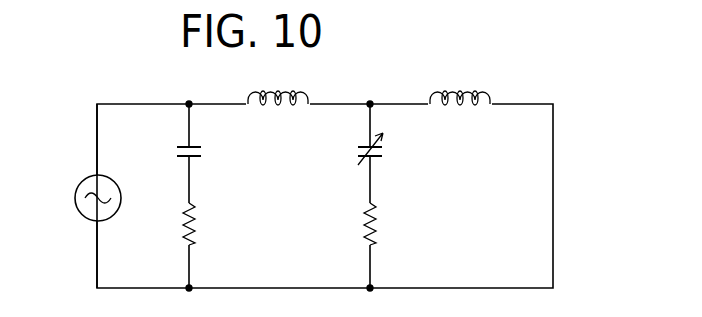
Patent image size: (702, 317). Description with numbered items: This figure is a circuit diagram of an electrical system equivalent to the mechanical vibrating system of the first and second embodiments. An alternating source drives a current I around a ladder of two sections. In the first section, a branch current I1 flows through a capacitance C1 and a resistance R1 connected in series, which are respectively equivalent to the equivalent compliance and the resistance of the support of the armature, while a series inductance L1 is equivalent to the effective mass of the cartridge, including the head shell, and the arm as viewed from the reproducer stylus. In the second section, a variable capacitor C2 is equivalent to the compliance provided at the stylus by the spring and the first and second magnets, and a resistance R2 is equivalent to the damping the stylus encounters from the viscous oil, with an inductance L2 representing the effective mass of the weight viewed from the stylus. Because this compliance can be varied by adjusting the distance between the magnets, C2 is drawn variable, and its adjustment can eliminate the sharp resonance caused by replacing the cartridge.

The source current I is at (85, 128).
The branch current I1 is at (173, 112).
The capacitance C1 is at (201, 151).
The resistance R1 is at (196, 221).
The inductance L1 is at (271, 121).
The variable capacitor C2 is at (383, 151).
The resistance R2 is at (377, 221).
The inductance L2 is at (461, 112).